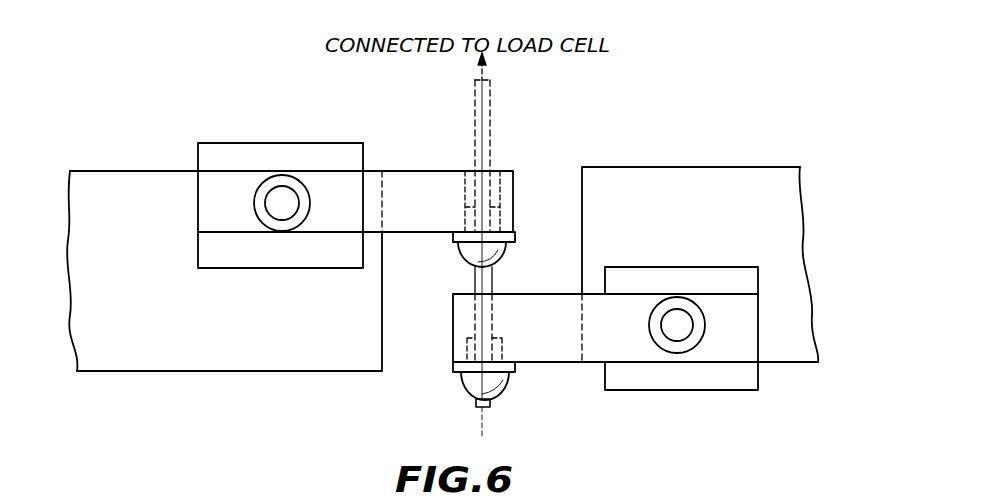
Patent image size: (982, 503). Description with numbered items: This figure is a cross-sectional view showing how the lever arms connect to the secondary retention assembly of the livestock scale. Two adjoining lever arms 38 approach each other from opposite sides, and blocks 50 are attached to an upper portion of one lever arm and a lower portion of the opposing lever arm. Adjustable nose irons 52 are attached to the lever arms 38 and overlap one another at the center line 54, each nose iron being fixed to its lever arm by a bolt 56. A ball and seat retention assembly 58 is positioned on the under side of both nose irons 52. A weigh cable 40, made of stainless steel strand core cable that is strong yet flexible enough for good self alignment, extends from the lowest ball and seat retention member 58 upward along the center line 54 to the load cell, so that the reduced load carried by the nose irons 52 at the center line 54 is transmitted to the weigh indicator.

The lever arm 38 is at (118, 183).
The weigh cable 40 is at (490, 133).
The block 50 is at (232, 143).
The adjustable nose iron 52 is at (405, 177).
The center line 54 is at (483, 418).
The bolt 56 is at (295, 190).
The ball and seat retention assembly 58 is at (513, 232).